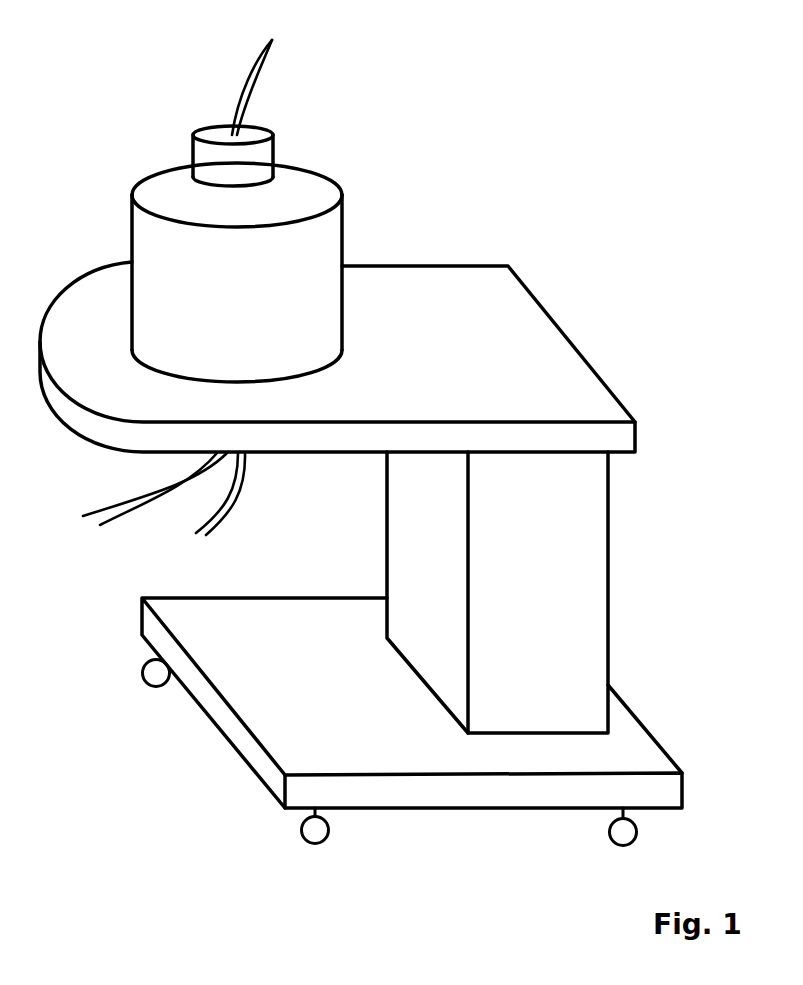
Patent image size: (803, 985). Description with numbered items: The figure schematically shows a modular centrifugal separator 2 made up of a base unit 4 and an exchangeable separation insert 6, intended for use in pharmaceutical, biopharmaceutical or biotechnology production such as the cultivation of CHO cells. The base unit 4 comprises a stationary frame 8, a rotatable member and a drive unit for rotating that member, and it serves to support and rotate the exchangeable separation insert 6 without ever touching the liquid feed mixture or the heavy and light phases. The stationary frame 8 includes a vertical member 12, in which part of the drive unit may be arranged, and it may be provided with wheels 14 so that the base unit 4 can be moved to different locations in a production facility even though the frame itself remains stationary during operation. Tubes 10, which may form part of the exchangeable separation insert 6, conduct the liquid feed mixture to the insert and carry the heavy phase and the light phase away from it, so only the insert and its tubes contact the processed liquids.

The modular centrifugal separator 2 is at (642, 151).
The base unit 4 is at (585, 350).
The exchangeable separation insert 6 is at (213, 156).
The stationary frame 8 is at (436, 298).
The tubes 10 is at (242, 88).
The vertical member 12 is at (583, 527).
The wheels 14 is at (153, 673).